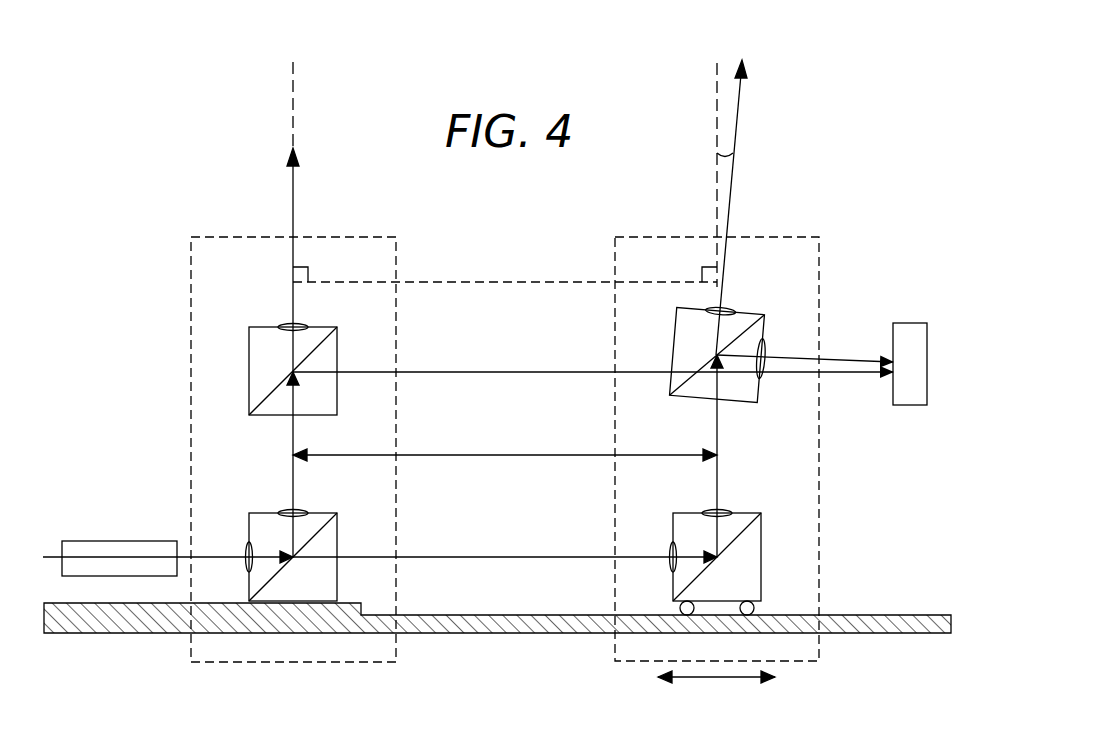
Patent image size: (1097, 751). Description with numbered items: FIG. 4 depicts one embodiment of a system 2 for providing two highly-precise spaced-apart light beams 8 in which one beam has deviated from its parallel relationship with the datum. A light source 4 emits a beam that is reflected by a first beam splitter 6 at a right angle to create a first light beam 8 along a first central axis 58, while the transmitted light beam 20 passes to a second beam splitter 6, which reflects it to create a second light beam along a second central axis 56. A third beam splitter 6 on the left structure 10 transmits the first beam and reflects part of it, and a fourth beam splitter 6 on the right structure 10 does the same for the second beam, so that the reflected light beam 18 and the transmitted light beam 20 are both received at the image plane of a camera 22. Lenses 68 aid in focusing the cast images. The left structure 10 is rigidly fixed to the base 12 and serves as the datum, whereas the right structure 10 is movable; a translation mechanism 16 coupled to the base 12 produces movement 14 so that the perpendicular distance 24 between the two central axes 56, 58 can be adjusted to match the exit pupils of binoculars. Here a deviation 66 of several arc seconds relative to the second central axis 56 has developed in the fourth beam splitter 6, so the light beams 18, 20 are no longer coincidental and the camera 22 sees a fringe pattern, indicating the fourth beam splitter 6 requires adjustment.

The system 2 is at (852, 531).
The light source 4 is at (110, 540).
The beam splitter 6 is at (506, 454).
The light beam 8 is at (292, 176).
The structure 10 is at (366, 237).
The base 12 is at (877, 614).
The movement 14 is at (712, 678).
The translation mechanism 16 is at (681, 607).
The reflected light beam 18 is at (490, 371).
The transmitted light beam 20 is at (492, 556).
The camera 22 is at (915, 322).
The distance 24 is at (468, 454).
The second central axis 56 is at (716, 95).
The first central axis 58 is at (295, 108).
The deviation 66 is at (724, 152).
The lens 68 is at (300, 325).